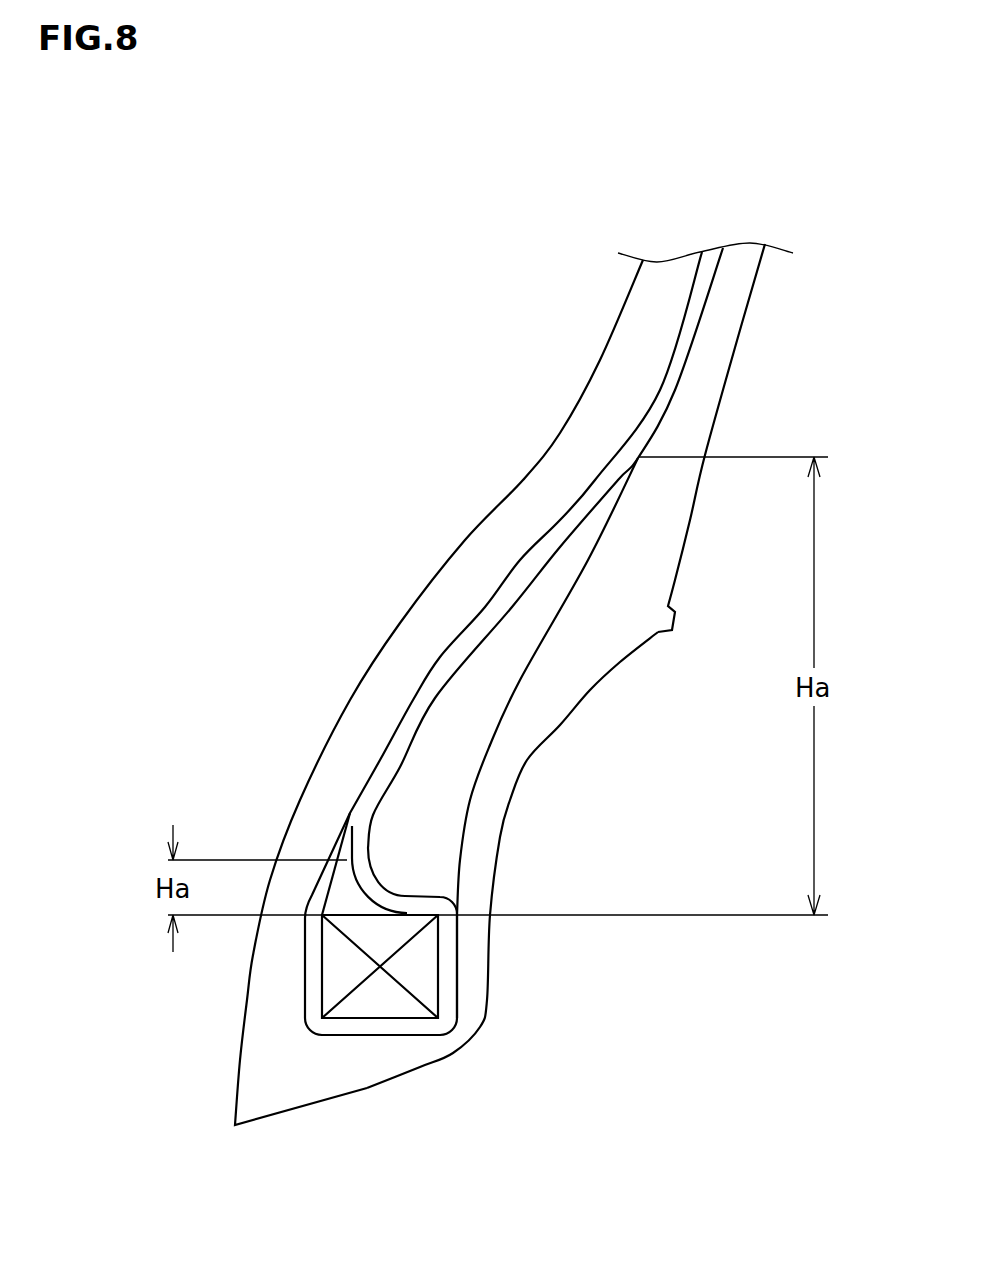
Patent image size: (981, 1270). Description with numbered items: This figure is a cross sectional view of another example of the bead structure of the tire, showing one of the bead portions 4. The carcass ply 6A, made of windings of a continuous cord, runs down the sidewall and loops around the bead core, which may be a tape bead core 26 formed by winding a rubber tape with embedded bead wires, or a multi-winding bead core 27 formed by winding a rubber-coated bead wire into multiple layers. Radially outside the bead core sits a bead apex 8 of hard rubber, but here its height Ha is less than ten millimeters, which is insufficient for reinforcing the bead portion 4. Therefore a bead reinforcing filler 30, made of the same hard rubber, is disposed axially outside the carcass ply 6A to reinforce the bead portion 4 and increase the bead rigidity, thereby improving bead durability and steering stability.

The bead portion 4 is at (298, 667).
The carcass ply 6A is at (528, 568).
The bead reinforcing filler 30 is at (503, 667).
The bead apex 8 is at (352, 897).
The tape bead core 26 is at (380, 1048).
The multi-winding bead core 27 is at (385, 998).